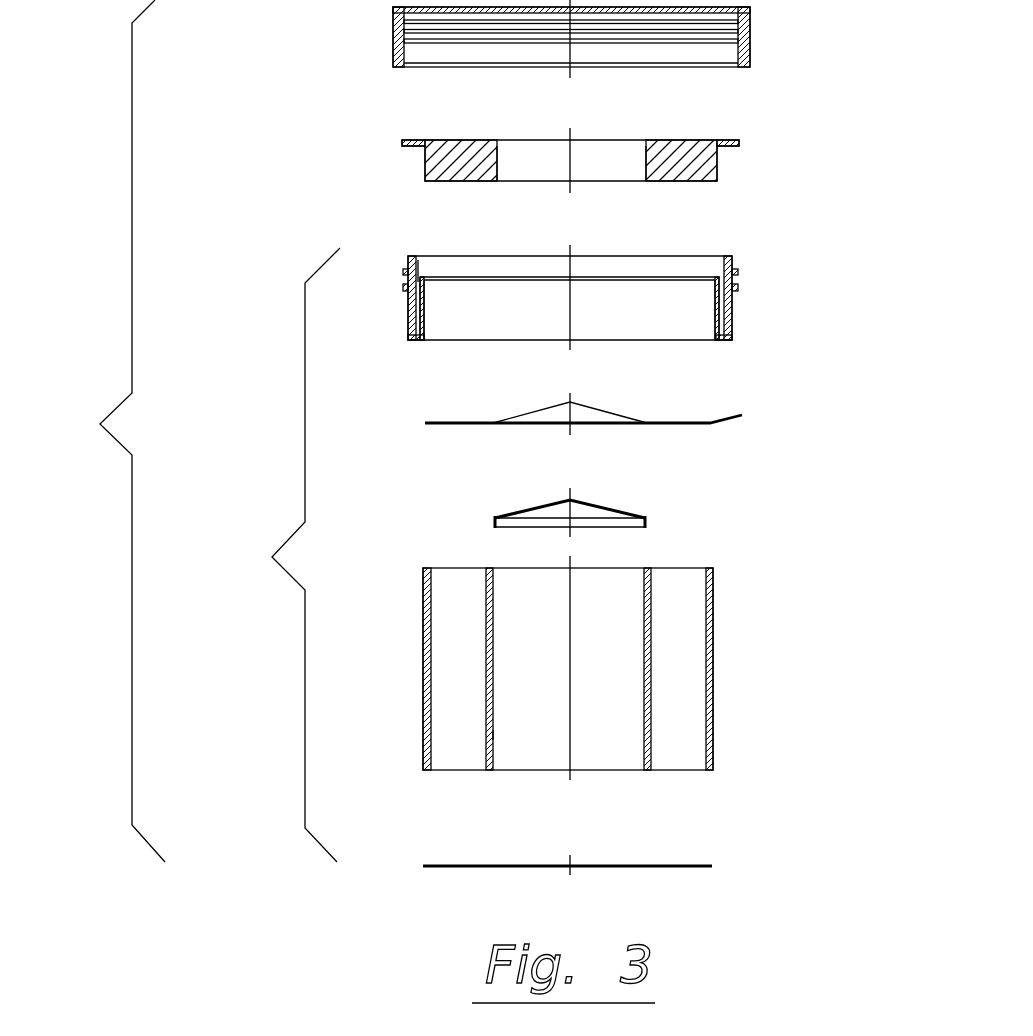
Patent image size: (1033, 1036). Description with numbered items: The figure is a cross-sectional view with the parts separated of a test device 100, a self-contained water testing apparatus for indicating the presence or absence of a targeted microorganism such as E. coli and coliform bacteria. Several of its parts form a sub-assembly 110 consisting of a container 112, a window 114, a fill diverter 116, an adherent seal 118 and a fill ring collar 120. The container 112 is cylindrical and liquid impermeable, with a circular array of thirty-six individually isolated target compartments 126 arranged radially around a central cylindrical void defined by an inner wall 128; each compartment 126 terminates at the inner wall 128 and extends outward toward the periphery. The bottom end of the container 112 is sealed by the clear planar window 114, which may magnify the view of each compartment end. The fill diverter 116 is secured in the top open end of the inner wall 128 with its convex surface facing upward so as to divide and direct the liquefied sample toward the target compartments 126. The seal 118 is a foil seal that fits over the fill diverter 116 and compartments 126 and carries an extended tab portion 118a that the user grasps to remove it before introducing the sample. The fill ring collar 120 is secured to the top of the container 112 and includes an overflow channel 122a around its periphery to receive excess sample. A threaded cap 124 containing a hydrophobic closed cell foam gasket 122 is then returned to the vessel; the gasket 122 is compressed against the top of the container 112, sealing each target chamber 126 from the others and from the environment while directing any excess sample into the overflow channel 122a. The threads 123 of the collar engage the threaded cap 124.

The test device 100 is at (95, 431).
The sub-assembly 110 is at (267, 555).
The container 112 is at (645, 701).
The window 114 is at (698, 862).
The fill diverter 116 is at (638, 515).
The adherent seal 118 is at (737, 433).
The extended tab portion 118a is at (732, 412).
The fill ring collar 120 is at (740, 318).
The gasket 122 is at (747, 137).
The overflow channel 122a is at (418, 262).
The threads 123 is at (738, 268).
The threaded cap 124 is at (752, 36).
The target compartments 126 is at (700, 732).
The inner wall 128 is at (497, 735).